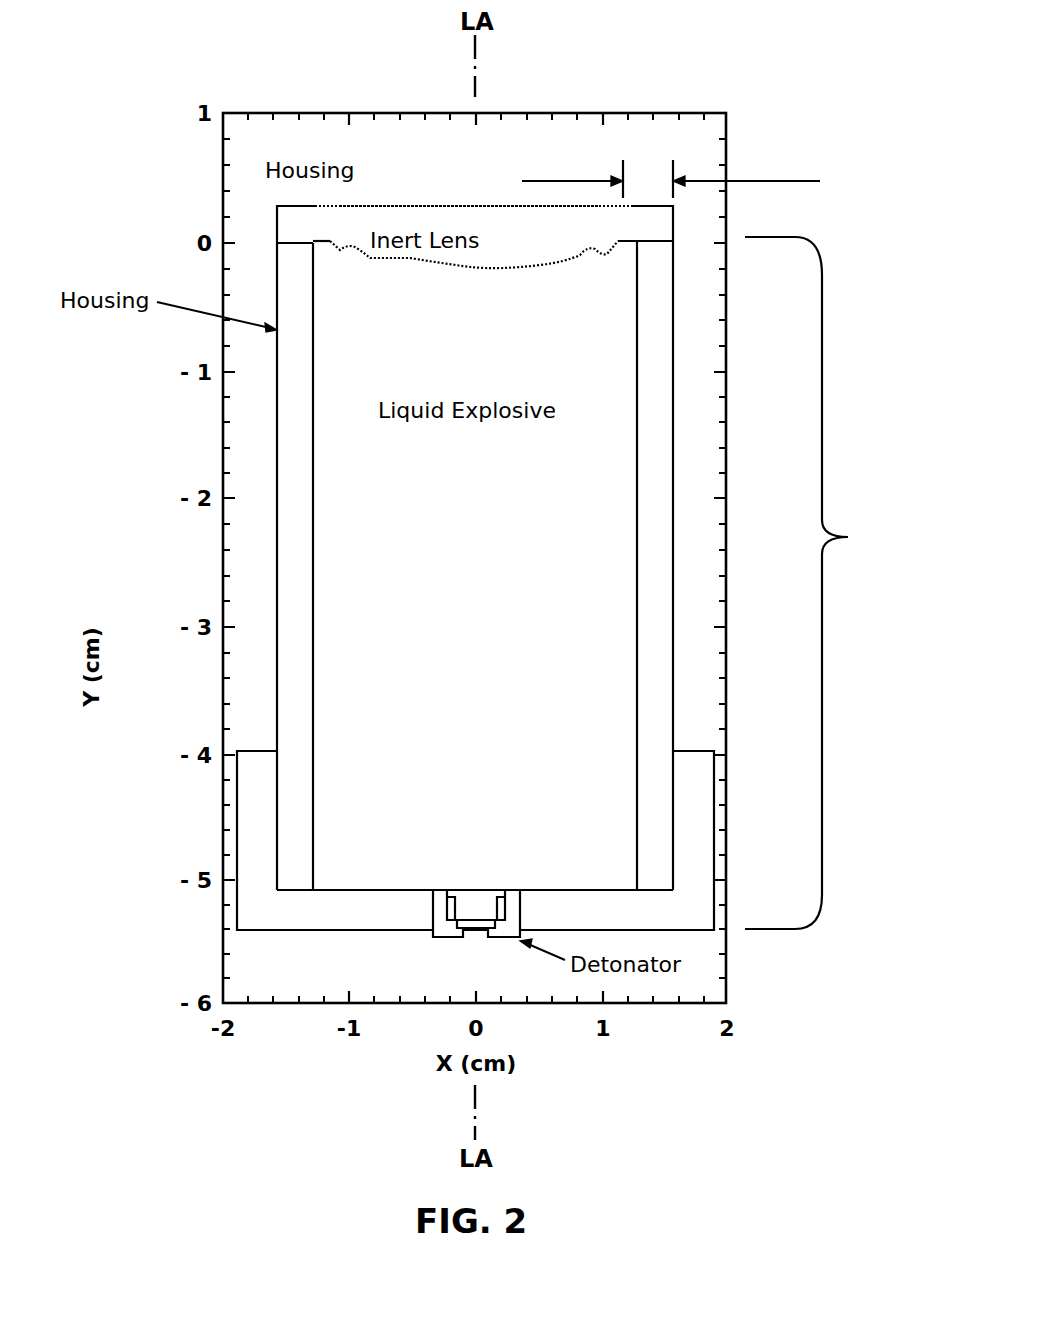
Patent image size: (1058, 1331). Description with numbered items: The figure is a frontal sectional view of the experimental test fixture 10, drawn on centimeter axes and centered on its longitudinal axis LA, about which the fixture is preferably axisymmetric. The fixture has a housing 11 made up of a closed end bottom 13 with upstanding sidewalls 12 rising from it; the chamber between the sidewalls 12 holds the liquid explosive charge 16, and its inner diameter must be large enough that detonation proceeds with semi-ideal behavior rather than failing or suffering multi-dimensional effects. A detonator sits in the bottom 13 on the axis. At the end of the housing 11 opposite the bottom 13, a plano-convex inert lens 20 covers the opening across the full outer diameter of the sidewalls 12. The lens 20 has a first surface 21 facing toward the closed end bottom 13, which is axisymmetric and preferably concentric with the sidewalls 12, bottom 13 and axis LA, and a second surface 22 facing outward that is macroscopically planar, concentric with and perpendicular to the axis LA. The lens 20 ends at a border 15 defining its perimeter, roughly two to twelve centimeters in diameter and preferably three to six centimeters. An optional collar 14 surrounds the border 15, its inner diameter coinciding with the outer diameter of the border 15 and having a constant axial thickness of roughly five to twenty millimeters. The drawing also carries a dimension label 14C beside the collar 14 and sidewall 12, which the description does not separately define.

The test fixture 10 is at (457, 650).
The housing 11 is at (819, 583).
The sidewalls 12 is at (297, 467).
The closed end bottom 13 is at (317, 908).
The collar 14 is at (325, 248).
The wall thickness 14C is at (696, 179).
The border 15 is at (620, 243).
The charge 16 is at (473, 905).
The lens 20 is at (295, 222).
The first surface 21 is at (410, 265).
The second surface 22 is at (372, 206).